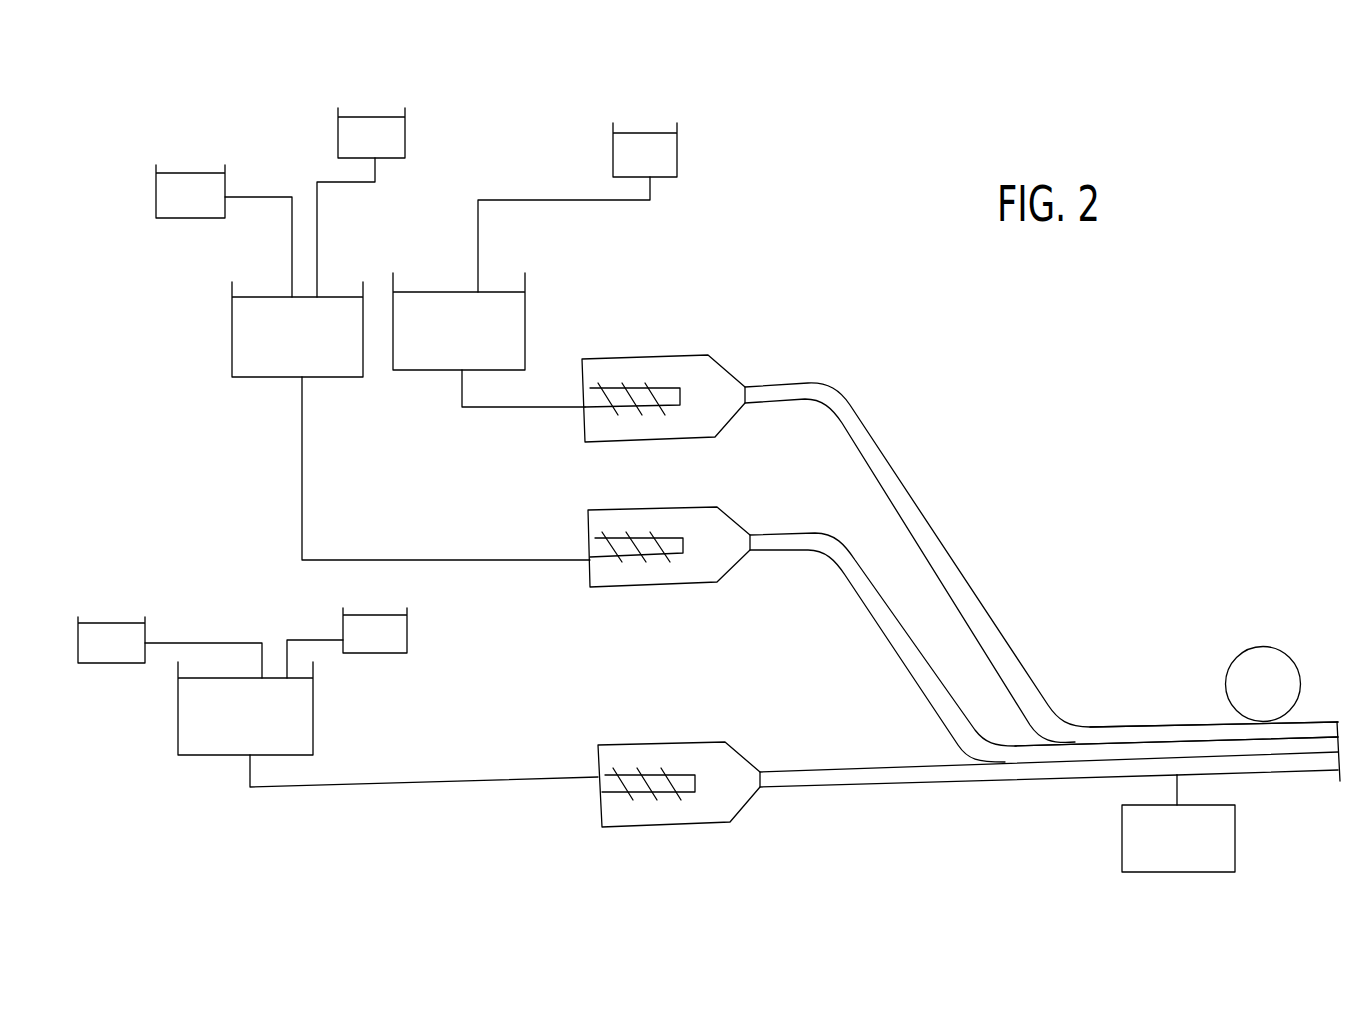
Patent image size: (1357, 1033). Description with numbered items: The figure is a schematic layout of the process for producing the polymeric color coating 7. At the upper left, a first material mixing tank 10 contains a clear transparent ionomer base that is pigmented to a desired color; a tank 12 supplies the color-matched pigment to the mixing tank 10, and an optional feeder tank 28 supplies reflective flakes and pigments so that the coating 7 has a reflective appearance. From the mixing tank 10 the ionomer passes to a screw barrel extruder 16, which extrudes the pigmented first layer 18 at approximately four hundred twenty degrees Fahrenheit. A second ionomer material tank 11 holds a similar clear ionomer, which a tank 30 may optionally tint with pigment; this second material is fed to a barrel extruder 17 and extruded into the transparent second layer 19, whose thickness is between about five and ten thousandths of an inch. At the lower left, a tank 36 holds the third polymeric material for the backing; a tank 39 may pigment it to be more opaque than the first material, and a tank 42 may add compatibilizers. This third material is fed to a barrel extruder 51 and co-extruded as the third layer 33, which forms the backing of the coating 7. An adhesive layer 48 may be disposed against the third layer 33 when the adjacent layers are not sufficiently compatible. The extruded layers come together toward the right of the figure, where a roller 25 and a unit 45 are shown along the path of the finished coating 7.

The coating 7 is at (1172, 716).
The first material mixing tank 10 is at (232, 338).
The second ionomer material tank 11 is at (527, 317).
The tank 12 is at (150, 197).
The screw barrel extruder 16 is at (698, 587).
The barrel extruder 17 is at (680, 355).
The first layer 18 is at (843, 563).
The second layer 19 is at (808, 380).
The roller 25 is at (1265, 647).
The feeder tank 28 is at (405, 138).
The tank 30 is at (677, 152).
The third layer 33 is at (868, 787).
The tank 36 is at (178, 720).
The tank 39 is at (148, 633).
The tank 42 is at (407, 630).
The drive unit 45 is at (1122, 840).
The adhesive layer 48 is at (1300, 780).
The barrel extruder 51 is at (665, 827).